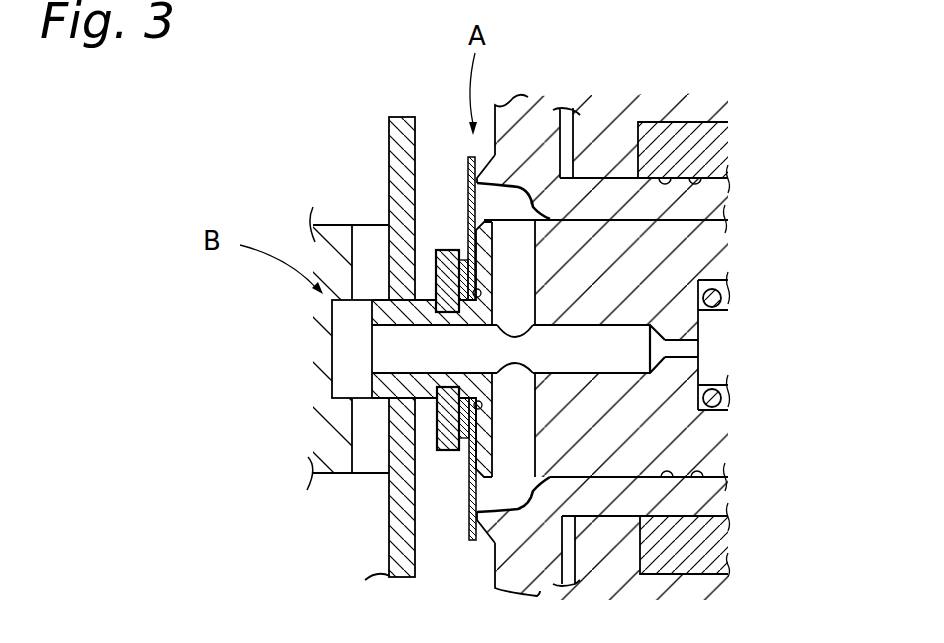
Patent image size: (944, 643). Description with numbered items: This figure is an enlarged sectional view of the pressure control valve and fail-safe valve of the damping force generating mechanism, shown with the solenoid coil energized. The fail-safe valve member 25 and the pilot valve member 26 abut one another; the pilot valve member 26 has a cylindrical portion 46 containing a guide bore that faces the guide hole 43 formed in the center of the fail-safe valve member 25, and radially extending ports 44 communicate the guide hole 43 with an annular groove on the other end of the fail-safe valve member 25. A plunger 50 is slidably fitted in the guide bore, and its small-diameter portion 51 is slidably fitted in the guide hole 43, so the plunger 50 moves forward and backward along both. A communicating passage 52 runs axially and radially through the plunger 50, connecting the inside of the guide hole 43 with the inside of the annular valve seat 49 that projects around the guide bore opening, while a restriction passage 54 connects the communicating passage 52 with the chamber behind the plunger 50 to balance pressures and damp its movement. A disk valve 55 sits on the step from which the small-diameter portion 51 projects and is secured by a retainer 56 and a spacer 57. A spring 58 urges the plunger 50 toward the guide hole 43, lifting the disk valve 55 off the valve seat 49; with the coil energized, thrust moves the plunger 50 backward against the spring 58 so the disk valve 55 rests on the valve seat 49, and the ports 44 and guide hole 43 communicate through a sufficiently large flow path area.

The fail-safe valve member 25 is at (393, 122).
The pilot valve member 26 is at (530, 120).
The guide hole 43 is at (333, 320).
The ports 44 is at (375, 235).
The cylindrical portion 46 is at (713, 497).
The annular valve seat 49 is at (500, 598).
The plunger 50 is at (712, 250).
The small-diameter portion 51 is at (422, 312).
The communicating passage 52 is at (398, 372).
The restriction passage 54 is at (700, 348).
The disk valve 55 is at (473, 542).
The retainer 56 is at (447, 451).
The spacer 57 is at (464, 430).
The spring 58 is at (715, 312).